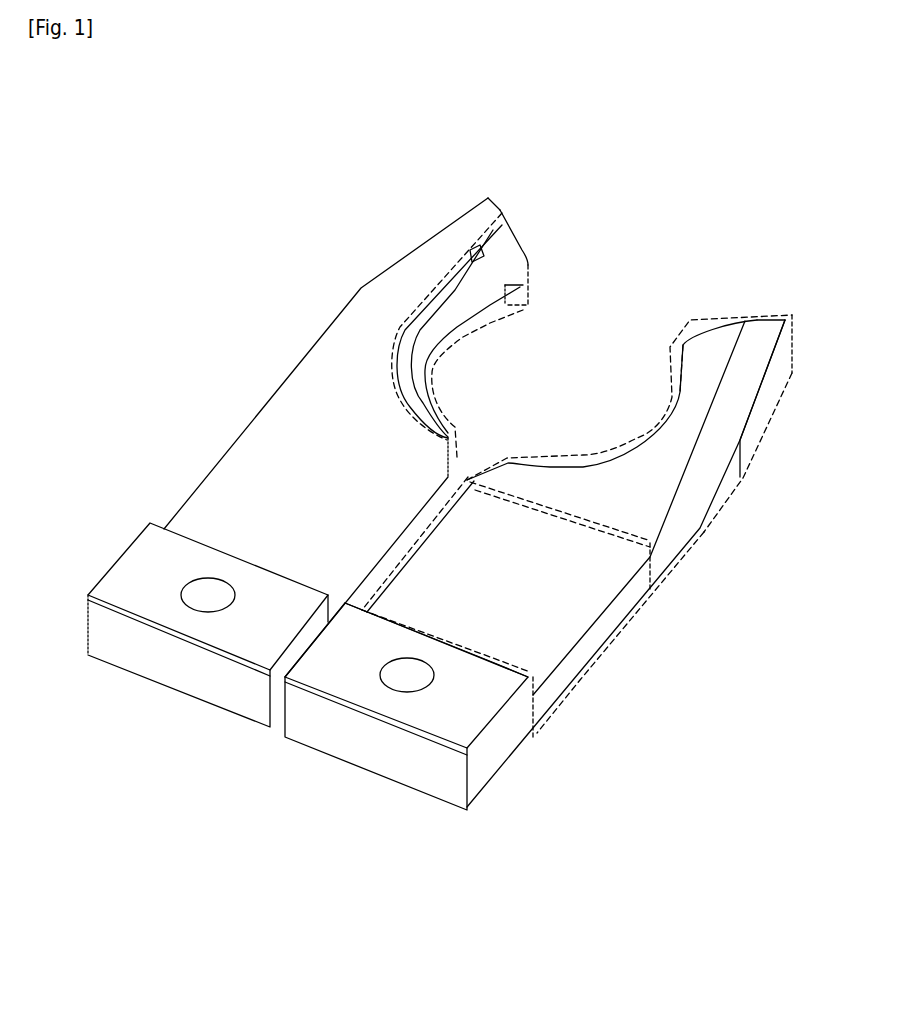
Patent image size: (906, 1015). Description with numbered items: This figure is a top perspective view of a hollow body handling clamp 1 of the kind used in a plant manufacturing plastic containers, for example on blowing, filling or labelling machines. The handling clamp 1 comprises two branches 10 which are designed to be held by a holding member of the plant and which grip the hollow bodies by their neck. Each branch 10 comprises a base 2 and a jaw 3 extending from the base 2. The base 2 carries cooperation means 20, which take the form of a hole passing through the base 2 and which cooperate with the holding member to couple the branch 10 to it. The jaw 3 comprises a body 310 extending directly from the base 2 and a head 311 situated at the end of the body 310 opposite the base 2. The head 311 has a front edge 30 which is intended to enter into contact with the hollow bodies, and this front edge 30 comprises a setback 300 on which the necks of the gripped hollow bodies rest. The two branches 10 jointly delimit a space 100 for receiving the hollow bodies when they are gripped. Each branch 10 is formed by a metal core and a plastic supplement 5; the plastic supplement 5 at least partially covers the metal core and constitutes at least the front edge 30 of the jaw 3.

The hollow body handling clamp 1 is at (287, 845).
The base 2 is at (58, 618).
The jaw 3 is at (440, 175).
The plastic supplement 5 is at (612, 603).
The branch 10 is at (323, 755).
The cooperation means 20 is at (233, 606).
The front edge 30 is at (511, 226).
The space 100 is at (592, 346).
The setback 300 is at (500, 270).
The body 310 is at (635, 613).
The head 311 is at (677, 560).